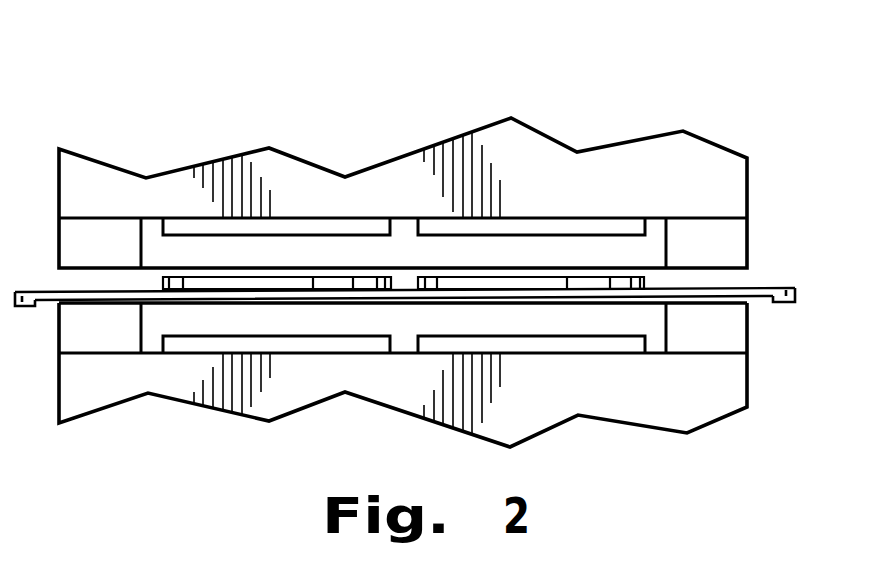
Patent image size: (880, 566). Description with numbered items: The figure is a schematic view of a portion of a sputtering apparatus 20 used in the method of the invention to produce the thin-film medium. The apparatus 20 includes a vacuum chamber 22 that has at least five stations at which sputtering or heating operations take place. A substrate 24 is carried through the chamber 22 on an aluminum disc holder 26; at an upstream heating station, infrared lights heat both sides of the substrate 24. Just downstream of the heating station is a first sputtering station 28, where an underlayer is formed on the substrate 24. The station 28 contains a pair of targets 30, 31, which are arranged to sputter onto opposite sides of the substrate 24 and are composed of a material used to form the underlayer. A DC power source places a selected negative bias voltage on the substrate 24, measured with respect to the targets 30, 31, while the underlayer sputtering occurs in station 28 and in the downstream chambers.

The sputtering apparatus 20 is at (418, 82).
The vacuum chamber 22 is at (778, 266).
The substrate 24 is at (467, 283).
The aluminum disc holder 26 is at (758, 297).
The first sputtering station 28 is at (509, 325).
The target 30 is at (565, 342).
The target 31 is at (538, 228).